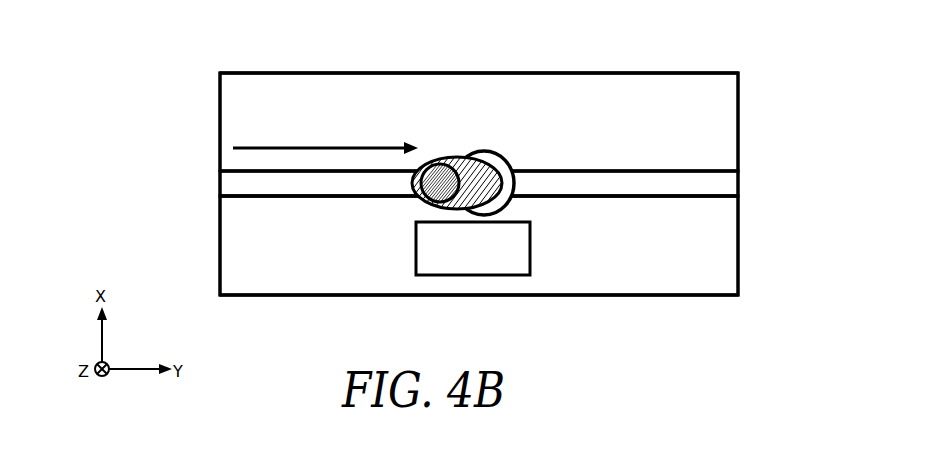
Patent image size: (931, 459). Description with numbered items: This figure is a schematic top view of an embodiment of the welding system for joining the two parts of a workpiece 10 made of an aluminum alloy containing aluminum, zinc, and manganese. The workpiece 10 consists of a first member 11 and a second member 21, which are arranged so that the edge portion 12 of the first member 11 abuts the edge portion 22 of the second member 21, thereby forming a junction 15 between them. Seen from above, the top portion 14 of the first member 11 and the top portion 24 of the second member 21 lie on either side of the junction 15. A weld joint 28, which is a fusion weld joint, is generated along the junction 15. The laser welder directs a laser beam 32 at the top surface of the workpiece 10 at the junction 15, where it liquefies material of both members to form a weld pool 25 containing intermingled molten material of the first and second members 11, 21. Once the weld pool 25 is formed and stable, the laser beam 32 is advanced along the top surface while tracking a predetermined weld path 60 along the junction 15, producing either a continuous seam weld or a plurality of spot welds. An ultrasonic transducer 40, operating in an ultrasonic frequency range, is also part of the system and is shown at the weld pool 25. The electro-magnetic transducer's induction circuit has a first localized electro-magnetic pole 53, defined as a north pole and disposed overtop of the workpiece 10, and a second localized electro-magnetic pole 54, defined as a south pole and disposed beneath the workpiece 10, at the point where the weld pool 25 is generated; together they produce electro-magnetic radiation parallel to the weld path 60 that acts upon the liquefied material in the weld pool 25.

The workpiece 10 is at (268, 66).
The first member 11 is at (221, 247).
The edge portion 12 is at (280, 198).
The top portion 14 is at (245, 268).
The junction 15 is at (241, 211).
The second member 21 is at (244, 97).
The edge portion 22 is at (292, 170).
The top portion 24 is at (221, 118).
The weld pool 25 is at (477, 180).
The weld joint 28 is at (228, 183).
The laser beam 32 is at (496, 160).
The ultrasonic transducer 40 is at (425, 150).
The first localized electro-magnetic pole 53 is at (473, 248).
The second localized electro-magnetic pole 54 is at (502, 260).
The weld path 60 is at (320, 147).